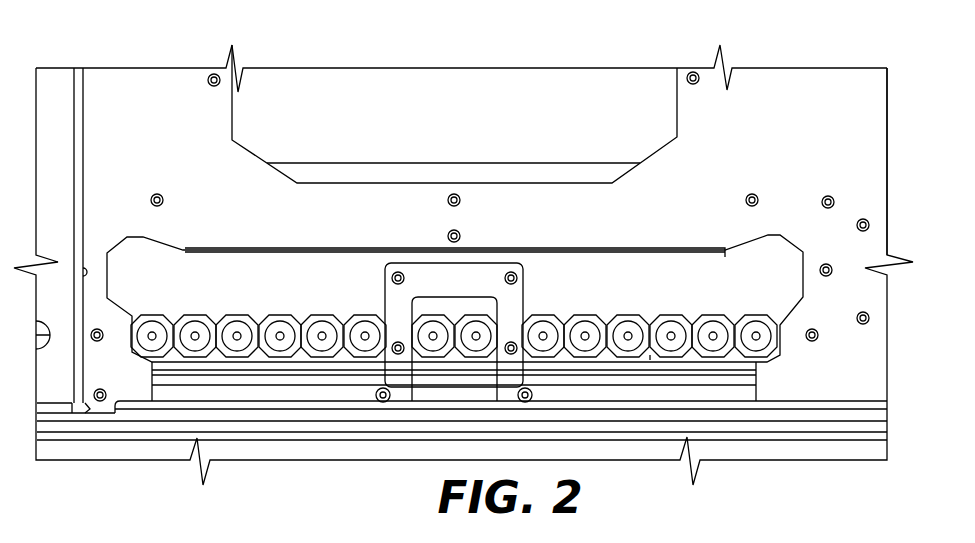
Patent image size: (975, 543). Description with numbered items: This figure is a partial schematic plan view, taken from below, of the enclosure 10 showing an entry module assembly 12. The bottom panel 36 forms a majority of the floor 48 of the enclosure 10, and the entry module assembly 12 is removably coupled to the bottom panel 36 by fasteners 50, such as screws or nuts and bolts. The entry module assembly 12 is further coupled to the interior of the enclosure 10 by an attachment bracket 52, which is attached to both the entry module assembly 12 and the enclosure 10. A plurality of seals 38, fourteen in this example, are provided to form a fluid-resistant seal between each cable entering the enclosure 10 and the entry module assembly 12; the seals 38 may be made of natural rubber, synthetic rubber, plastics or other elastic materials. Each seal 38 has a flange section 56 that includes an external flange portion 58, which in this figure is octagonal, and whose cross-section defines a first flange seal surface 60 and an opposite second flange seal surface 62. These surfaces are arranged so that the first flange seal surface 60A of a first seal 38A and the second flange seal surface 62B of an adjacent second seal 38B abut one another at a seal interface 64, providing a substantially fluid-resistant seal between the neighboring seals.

The enclosure 10 is at (805, 40).
The entry module assembly 12 is at (696, 222).
The bottom panel 36 is at (770, 146).
The seal 38 is at (151, 322).
The first seal 38A is at (624, 326).
The second seal 38B is at (686, 322).
The floor 48 is at (863, 140).
The fasteners 50 is at (158, 194).
The attachment bracket 52 is at (514, 303).
The flange section 56 is at (188, 320).
The external flange portion 58 is at (231, 322).
The first flange seal surface 60 is at (273, 320).
The first flange seal surface of the first seal 60A is at (650, 345).
The second flange seal surface 62 is at (302, 325).
The second flange seal surface of the second seal 62B is at (677, 326).
The seal interface 64 is at (650, 348).